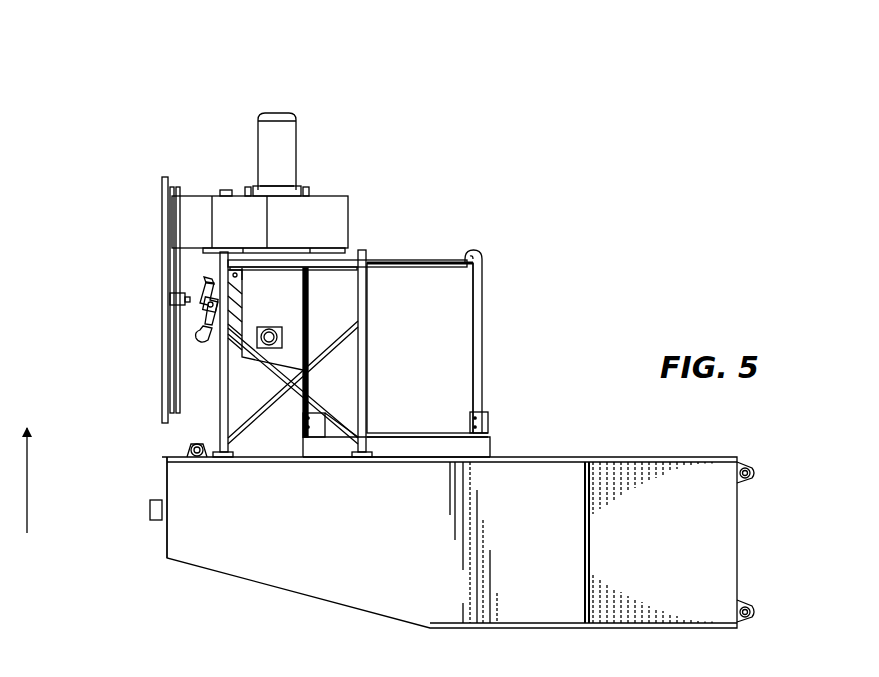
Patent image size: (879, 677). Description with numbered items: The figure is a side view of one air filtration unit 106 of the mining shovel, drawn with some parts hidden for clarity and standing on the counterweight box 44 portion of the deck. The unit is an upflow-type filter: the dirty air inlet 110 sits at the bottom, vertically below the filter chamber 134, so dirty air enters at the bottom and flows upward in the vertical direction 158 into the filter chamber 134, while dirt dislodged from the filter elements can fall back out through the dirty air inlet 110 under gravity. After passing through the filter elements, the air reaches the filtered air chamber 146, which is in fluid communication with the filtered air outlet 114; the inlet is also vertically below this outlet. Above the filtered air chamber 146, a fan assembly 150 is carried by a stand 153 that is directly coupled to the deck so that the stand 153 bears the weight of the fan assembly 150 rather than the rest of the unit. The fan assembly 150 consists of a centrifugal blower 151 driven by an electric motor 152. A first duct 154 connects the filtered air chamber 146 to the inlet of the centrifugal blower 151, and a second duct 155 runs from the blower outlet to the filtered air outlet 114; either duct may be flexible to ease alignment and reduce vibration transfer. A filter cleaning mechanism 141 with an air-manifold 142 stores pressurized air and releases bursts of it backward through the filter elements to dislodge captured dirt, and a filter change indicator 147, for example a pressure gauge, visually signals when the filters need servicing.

The counterweight box 44 is at (738, 542).
The air filtration unit 106 is at (480, 290).
The dirty air inlet 110 is at (403, 437).
The filtered air outlet 114 is at (165, 227).
The filter chamber 134 is at (433, 360).
The filter cleaning mechanism 141 is at (151, 277).
The air-manifold 142 is at (255, 318).
The filtered air chamber 146 is at (250, 323).
The filter change indicator 147 is at (268, 327).
The fan assembly 150 is at (277, 100).
The centrifugal blower 151 is at (342, 212).
The electric motor 152 is at (287, 150).
The stand 153 is at (220, 420).
The first air passageway or duct 154 is at (318, 250).
The second air passageway or duct 155 is at (192, 195).
The vertical direction 158 is at (27, 497).